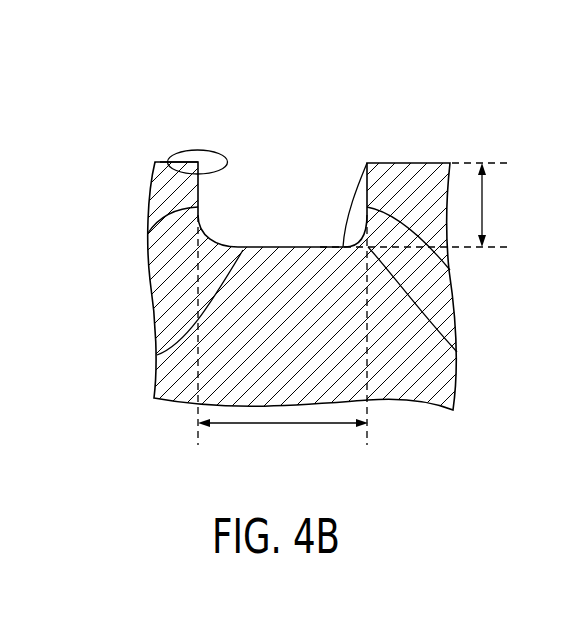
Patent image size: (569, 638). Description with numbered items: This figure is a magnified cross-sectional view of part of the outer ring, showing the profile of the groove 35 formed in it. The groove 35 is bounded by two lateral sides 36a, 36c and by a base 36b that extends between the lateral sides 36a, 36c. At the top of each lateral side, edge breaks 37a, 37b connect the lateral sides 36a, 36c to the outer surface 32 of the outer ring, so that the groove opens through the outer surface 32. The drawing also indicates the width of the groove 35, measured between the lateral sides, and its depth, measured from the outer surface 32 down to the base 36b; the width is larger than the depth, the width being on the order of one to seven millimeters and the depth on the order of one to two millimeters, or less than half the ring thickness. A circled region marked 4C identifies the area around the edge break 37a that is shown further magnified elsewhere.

The outer surface 32 is at (421, 163).
The groove 35 is at (457, 352).
The lateral side 36a is at (148, 233).
The base 36b is at (157, 355).
The lateral side 36c is at (450, 270).
The edge break 37a is at (193, 165).
The edge break 37b is at (367, 163).
The detail view region of FIG. 4C is at (172, 158).